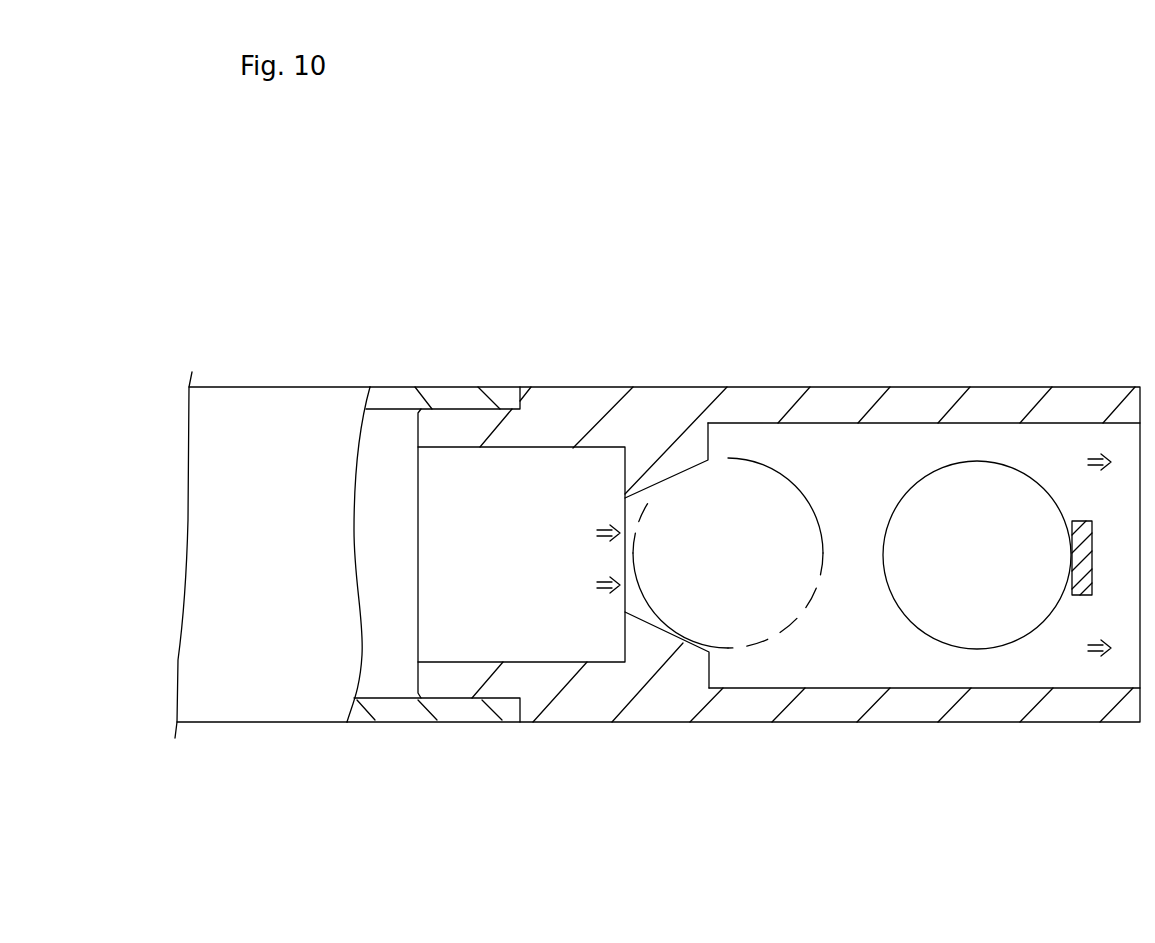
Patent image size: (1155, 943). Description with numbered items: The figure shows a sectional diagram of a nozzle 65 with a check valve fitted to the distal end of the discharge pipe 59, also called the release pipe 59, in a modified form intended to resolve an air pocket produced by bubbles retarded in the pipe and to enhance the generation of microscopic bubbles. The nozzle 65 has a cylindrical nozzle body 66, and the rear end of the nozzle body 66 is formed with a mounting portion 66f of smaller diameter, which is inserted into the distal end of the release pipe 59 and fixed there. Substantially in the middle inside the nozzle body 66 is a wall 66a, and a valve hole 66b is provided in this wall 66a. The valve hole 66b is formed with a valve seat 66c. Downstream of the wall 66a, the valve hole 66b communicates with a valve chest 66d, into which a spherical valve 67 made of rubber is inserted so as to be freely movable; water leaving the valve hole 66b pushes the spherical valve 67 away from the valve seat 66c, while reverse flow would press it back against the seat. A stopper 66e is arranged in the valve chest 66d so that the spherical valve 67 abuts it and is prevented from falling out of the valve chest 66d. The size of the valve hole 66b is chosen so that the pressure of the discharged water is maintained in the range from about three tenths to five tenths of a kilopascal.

The discharge pipe 59 is at (280, 393).
The nozzle with check valve 65 is at (780, 386).
The nozzle body 66 is at (897, 393).
The wall 66a is at (633, 640).
The valve hole 66b is at (622, 510).
The valve seat 66c is at (660, 626).
The valve chest 66d is at (822, 665).
The stopper 66e is at (1080, 595).
The mounting portion 66f is at (448, 415).
The spherical valve 67 is at (813, 598).